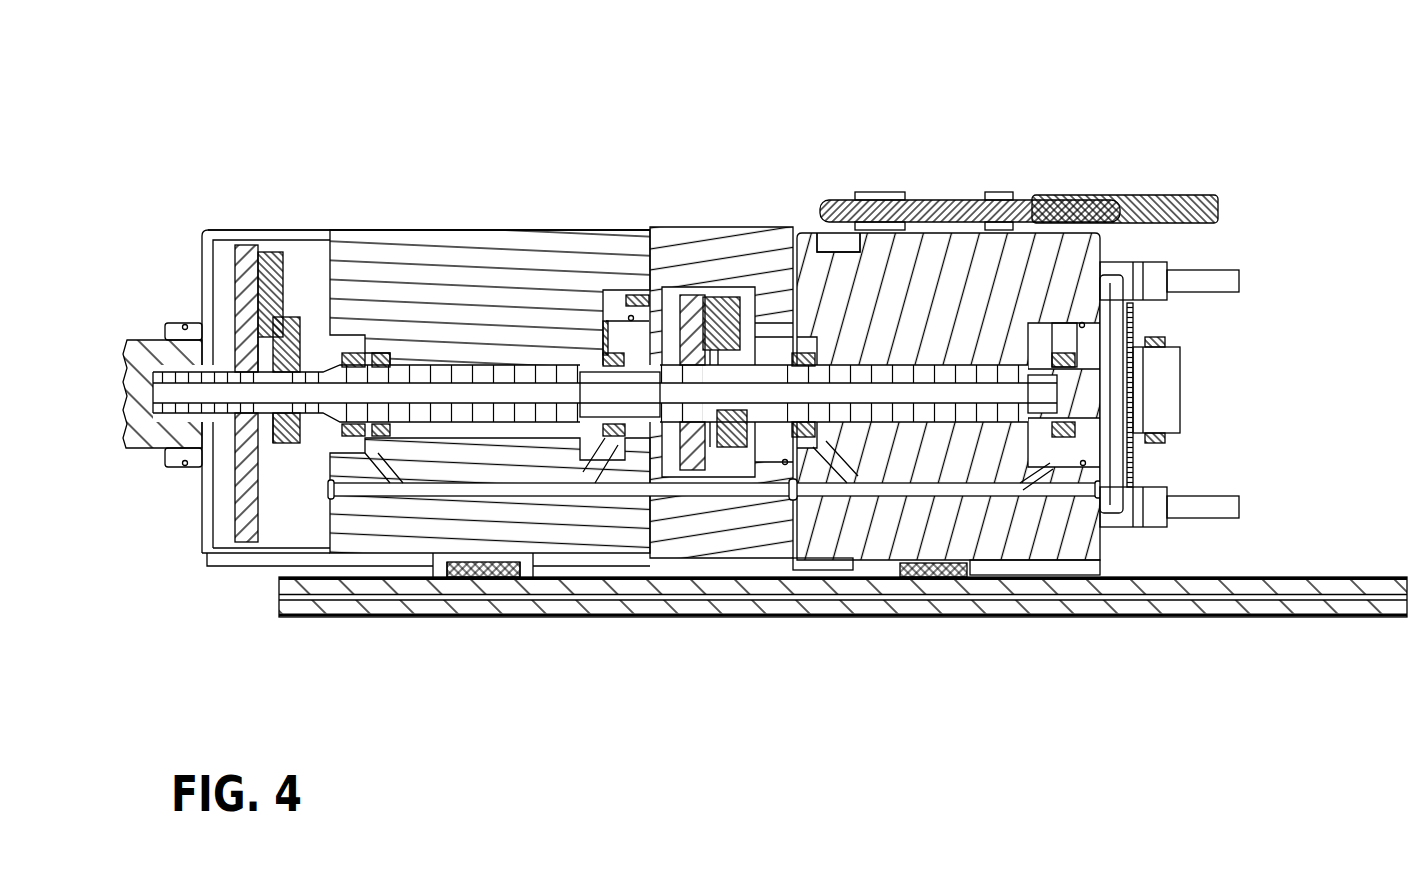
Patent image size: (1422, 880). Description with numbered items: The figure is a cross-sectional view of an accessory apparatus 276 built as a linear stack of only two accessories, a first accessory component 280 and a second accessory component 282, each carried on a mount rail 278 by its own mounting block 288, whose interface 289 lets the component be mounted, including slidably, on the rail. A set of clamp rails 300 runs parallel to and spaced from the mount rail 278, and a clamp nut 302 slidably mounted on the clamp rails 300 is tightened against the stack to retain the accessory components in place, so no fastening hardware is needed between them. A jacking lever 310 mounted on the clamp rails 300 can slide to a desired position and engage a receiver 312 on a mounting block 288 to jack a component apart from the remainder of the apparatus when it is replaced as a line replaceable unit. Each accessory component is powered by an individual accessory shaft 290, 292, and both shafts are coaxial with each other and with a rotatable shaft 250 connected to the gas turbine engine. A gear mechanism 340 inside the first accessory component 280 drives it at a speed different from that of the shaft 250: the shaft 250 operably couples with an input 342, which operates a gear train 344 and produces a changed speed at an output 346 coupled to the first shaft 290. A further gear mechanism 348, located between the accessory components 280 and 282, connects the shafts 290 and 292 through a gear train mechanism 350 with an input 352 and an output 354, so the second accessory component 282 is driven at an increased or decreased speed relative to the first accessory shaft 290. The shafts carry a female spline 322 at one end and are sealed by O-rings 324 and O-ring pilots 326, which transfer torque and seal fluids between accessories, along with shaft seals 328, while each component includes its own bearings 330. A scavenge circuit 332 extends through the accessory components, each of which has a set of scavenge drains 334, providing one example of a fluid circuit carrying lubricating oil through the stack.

The shaft 250 is at (143, 340).
The accessory apparatus 276 is at (313, 128).
The mount rail 278 is at (1372, 617).
The first accessory component 280 is at (396, 222).
The second accessory component 282 is at (992, 228).
The mounting block 288 is at (408, 250).
The interface 289 is at (497, 575).
The first accessory shaft 290 is at (443, 421).
The second accessory shaft 292 is at (870, 421).
The clamp rails 300 is at (1238, 272).
The clamp nut 302 is at (1178, 376).
The jacking lever 310 is at (925, 189).
The receiver 312 is at (817, 231).
The female spline 322 is at (588, 425).
The O-rings 324 is at (785, 350).
The O-ring pilots 326 is at (1108, 460).
The shaft seals 328 is at (392, 432).
The bearings 330 is at (348, 438).
The scavenge circuit 332 is at (528, 502).
The scavenge drains 334 is at (374, 438).
The gear mechanism 340 is at (226, 261).
The input 342 is at (225, 414).
The gear train 344 is at (270, 247).
The output 346 is at (297, 358).
The gear mechanism 348 is at (667, 221).
The gear train mechanism 350 is at (640, 378).
The input 352 is at (610, 322).
The output 354 is at (686, 290).